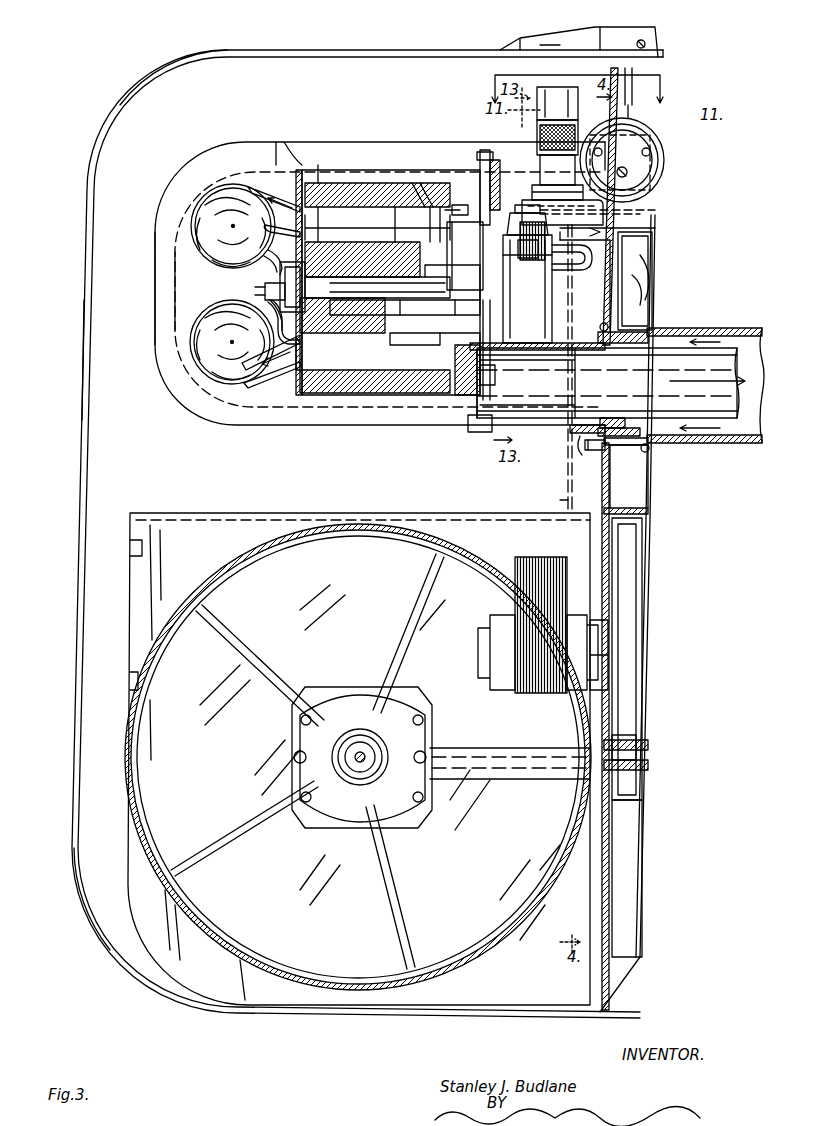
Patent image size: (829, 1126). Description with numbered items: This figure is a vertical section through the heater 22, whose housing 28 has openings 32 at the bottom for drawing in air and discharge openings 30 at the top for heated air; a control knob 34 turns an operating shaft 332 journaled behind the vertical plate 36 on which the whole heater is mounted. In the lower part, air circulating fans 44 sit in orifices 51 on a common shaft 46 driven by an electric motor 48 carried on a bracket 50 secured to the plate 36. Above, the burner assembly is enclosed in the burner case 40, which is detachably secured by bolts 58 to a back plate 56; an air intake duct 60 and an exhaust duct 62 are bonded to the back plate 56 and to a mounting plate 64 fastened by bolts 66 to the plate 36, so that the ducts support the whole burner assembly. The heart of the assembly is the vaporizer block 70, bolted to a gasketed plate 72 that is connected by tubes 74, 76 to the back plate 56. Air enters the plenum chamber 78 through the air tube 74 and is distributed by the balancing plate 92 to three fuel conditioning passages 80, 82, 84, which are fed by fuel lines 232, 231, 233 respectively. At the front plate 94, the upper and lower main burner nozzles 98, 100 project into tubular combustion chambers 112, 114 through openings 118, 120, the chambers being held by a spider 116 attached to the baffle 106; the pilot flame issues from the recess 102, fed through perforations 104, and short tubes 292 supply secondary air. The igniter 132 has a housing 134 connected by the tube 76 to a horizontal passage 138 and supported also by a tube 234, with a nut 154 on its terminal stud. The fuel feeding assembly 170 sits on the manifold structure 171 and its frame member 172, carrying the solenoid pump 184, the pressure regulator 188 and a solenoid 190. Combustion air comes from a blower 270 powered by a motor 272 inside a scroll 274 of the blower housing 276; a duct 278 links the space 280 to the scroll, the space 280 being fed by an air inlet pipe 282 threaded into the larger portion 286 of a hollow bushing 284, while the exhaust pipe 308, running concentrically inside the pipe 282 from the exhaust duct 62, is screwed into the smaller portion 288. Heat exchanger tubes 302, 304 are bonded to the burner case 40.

The heater 22 is at (86, 230).
The housing 28 is at (80, 356).
The discharge openings 30 is at (152, 88).
The openings 32 is at (92, 938).
The control knob 34 is at (660, 45).
The vertical plate 36 is at (608, 484).
The burner case 40 is at (352, 160).
The air circulating fans 44 is at (380, 545).
The common shaft 46 is at (358, 762).
The electric motor 48 is at (350, 686).
The bracket 50 is at (505, 782).
The orifices 51 is at (238, 566).
The back plate 56 is at (496, 180).
The bolts 58 is at (482, 152).
The air intake duct 60 is at (503, 222).
The exhaust duct 62 is at (556, 420).
The mounting plate 64 is at (602, 318).
The bolts 66 is at (590, 452).
The vaporizer block 70 is at (372, 182).
The gasketed plate 72 is at (458, 190).
The air tube 74 is at (459, 217).
The tube 76 is at (475, 350).
The plenum chamber 78 is at (418, 182).
The upper main burner fuel conditioning passage 80 is at (326, 180).
The pilot fuel conditioning passage 82 is at (378, 242).
The lower main burner fuel conditioning passage 84 is at (362, 394).
The balancing plate 92 is at (436, 258).
The front plate 94 is at (300, 170).
The upper main burner nozzle 98 is at (270, 190).
The lower main burner nozzle 100 is at (272, 385).
The pilot fuel port 102 is at (266, 282).
The perforations 104 is at (298, 318).
The baffle 106 is at (302, 340).
The upper tubular combustion chamber 112 is at (210, 188).
The lower tubular combustion chamber 114 is at (212, 385).
The spider 116 is at (268, 250).
The opening 118 is at (300, 236).
The opening 120 is at (320, 330).
The igniter 132 is at (524, 342).
The igniter housing 134 is at (540, 335).
The horizontal passage 138 is at (405, 299).
The nut 154 is at (527, 289).
The fuel feeding assembly 170 is at (564, 76).
The manifold structure 171 is at (657, 229).
The frame member 172 is at (656, 204).
The electric solenoid pump 184 is at (660, 140).
The fuel pressure regulator 188 is at (664, 170).
The solenoid 190 is at (545, 110).
The fuel line 231 is at (442, 282).
The fuel line 232 is at (412, 205).
The fuel line 233 is at (388, 375).
The tube 234 is at (652, 255).
The blower 270 is at (630, 751).
The electric motor 272 is at (532, 556).
The scroll 274 is at (652, 295).
The blower housing 276 is at (655, 548).
The duct 278 is at (560, 488).
The space 280 is at (636, 497).
The air inlet pipe 282 is at (752, 326).
The hollow bushing 284 is at (650, 463).
The larger threaded portion 286 is at (650, 328).
The smaller threaded portion 288 is at (612, 416).
The short tubes 292 is at (232, 290).
The heat exchanger tubes 302 is at (360, 232).
The heat exchanger tubes 304 is at (362, 340).
The exhaust pipe 308 is at (611, 383).
The operating shaft 332 is at (636, 96).